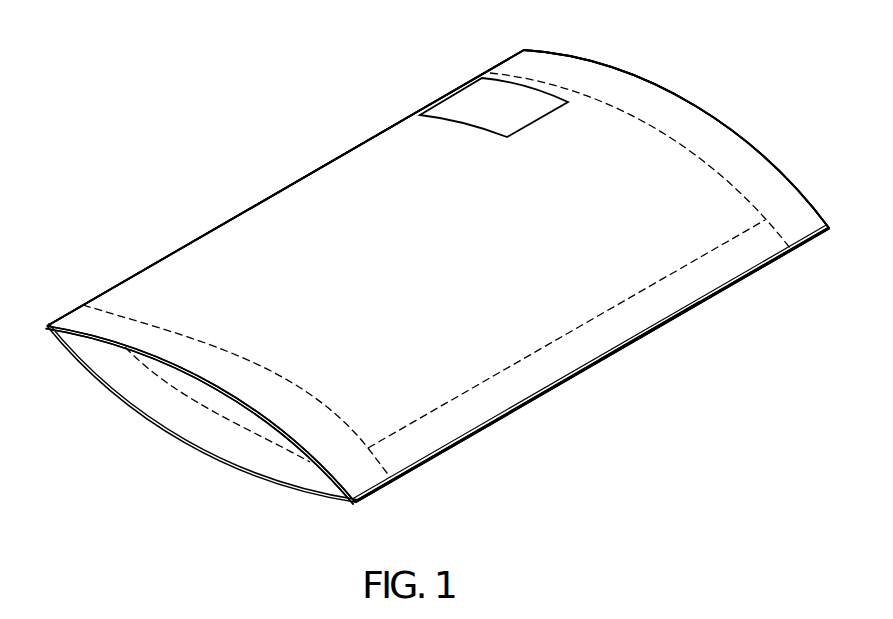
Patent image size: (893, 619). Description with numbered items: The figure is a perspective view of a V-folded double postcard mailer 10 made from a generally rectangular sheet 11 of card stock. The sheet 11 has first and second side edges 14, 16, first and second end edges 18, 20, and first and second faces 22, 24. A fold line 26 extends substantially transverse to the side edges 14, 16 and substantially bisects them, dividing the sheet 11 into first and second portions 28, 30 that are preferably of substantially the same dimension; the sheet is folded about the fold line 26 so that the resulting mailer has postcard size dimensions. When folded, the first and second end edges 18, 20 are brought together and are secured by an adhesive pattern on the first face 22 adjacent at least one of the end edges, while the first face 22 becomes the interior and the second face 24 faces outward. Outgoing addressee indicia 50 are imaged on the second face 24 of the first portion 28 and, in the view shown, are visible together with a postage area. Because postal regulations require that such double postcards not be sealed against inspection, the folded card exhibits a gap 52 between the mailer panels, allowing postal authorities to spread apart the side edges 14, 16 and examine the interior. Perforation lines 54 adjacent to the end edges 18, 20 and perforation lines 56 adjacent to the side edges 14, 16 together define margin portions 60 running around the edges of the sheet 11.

The mailer envelope 10 is at (571, 52).
The sheet 11 is at (623, 210).
The first side edge 14 is at (660, 93).
The second side edge 16 is at (157, 430).
The first end edge 18 is at (613, 342).
The second end edge 20 is at (558, 388).
The first face 22 is at (167, 368).
The second face 24 is at (405, 143).
The fold line 26 is at (182, 245).
The first portion 28 is at (333, 187).
The second portion 30 is at (283, 443).
The outgoing addressee indicia 50 is at (520, 243).
The gap between side edges 52 is at (222, 405).
The perforation lines 54 is at (695, 260).
The perforation lines 56 is at (603, 107).
The margin portions 60 is at (752, 157).